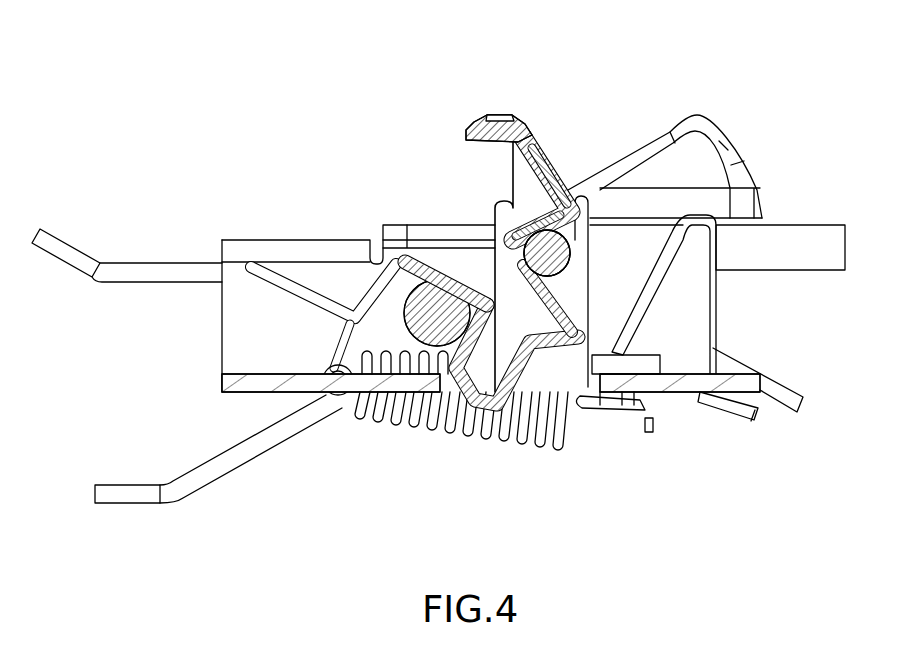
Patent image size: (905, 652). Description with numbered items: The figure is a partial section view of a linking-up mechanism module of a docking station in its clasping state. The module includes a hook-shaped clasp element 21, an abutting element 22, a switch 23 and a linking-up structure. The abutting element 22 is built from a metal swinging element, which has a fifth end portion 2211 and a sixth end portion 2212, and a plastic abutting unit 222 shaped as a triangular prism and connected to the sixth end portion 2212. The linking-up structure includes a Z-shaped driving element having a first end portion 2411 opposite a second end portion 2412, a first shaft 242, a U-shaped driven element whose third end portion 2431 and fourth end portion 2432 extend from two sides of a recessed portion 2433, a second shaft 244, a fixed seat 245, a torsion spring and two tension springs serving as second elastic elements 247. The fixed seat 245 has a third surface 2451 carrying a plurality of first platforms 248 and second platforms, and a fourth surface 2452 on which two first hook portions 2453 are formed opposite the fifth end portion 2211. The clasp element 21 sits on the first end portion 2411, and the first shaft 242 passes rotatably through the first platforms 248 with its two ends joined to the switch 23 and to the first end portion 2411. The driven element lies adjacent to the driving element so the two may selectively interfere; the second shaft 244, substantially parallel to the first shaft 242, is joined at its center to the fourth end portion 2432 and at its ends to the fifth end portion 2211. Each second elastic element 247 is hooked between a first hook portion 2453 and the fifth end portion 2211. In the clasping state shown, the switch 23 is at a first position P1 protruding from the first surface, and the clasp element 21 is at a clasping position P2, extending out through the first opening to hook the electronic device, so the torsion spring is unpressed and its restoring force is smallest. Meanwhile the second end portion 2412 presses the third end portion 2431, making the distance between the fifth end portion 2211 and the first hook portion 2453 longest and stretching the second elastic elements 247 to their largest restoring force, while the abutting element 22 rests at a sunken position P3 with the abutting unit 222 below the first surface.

The clasp element 21 is at (527, 128).
The abutting element 22 is at (708, 243).
The switch 23 is at (727, 142).
The abutting unit 222 is at (683, 320).
The first shaft 242 is at (518, 257).
The second shaft 244 is at (408, 298).
The fixed seat 245 is at (687, 386).
The second elastic element 247 is at (502, 430).
The first platforms 248 is at (507, 205).
The fifth end portion 2211 is at (345, 372).
The sixth end portion 2212 is at (662, 358).
The first end portion 2411 is at (548, 162).
The second end portion 2412 is at (548, 298).
The third end portion 2431 is at (572, 348).
The fourth end portion 2432 is at (412, 262).
The recessed portion 2433 is at (466, 400).
The third surface 2451 is at (745, 374).
The fourth surface 2452 is at (702, 394).
The first hook portions 2453 is at (626, 410).
The first position P1 is at (696, 125).
The clasping position P2 is at (508, 115).
The sunken position P3 is at (705, 280).